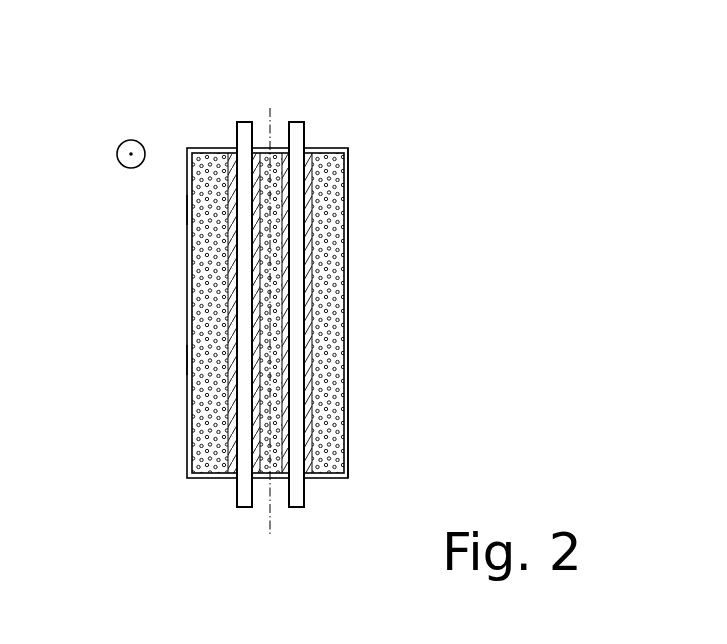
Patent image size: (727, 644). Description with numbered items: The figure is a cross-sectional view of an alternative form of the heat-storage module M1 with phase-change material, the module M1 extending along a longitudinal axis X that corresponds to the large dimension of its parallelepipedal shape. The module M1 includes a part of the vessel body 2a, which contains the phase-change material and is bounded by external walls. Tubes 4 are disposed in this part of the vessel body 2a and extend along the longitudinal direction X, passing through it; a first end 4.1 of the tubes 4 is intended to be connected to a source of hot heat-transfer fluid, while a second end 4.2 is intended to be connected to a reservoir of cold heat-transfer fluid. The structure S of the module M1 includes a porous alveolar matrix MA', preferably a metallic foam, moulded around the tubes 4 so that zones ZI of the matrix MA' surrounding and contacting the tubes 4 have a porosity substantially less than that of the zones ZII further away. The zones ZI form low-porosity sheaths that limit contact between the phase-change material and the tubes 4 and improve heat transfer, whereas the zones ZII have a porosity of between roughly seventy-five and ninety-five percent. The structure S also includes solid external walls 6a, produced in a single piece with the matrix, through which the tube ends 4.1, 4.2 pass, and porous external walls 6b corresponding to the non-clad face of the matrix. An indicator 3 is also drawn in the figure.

The axis direction indicator 3 is at (130, 154).
The heat-storage module M1 is at (186, 122).
The solid external wall 6a is at (220, 147).
The porous external wall 6b is at (350, 270).
The tube 4 is at (306, 208).
The first end of the tubes 4.1 is at (245, 121).
The second end of the tubes 4.2 is at (236, 497).
The matrix MA' is at (124, 211).
The low-porosity zone ZI is at (257, 268).
The zone distant from the tubes ZII is at (207, 348).
The vessel body 2a is at (182, 361).
The structure of the module S is at (151, 442).
The longitudinal axis X is at (271, 533).